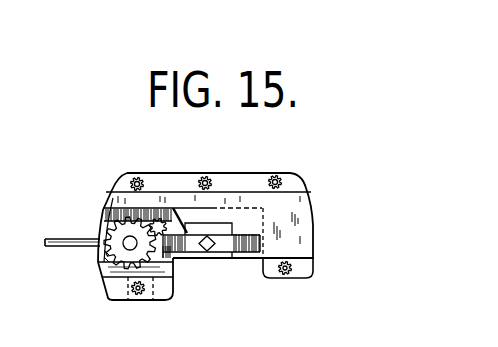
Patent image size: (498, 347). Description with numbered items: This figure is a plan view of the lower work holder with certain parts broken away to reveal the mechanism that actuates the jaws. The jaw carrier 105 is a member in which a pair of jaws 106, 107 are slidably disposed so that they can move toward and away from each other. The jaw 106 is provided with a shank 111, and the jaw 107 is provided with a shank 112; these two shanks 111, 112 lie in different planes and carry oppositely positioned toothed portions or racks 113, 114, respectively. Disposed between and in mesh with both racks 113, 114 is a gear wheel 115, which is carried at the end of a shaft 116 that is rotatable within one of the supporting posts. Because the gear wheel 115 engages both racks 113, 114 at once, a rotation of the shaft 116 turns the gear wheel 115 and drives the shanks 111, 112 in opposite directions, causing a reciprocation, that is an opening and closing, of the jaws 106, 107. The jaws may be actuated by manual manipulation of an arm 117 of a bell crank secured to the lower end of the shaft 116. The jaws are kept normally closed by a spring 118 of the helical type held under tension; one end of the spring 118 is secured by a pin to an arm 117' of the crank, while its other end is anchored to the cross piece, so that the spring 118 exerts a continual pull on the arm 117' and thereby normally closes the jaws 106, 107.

The jaw carrier 105 is at (315, 262).
The jaw 106 is at (200, 250).
The jaw 107 is at (223, 250).
The shank 111 is at (178, 264).
The shank 112 is at (300, 213).
The toothed portion or rack 113 is at (103, 255).
The toothed portion or rack 114 is at (108, 228).
The gear wheel 115 is at (122, 246).
The shaft 116 is at (109, 267).
The arm of bell crank 117 is at (56, 244).
The arm of crank 117' is at (128, 302).
The spring 118 is at (153, 300).